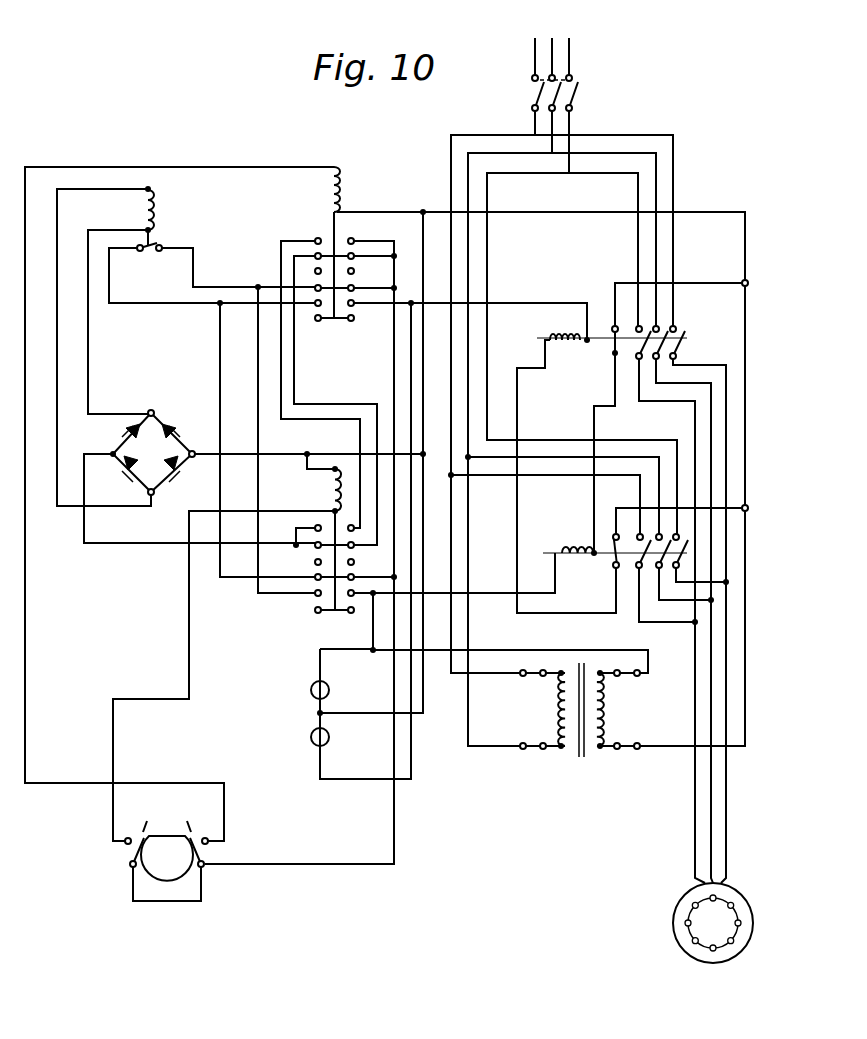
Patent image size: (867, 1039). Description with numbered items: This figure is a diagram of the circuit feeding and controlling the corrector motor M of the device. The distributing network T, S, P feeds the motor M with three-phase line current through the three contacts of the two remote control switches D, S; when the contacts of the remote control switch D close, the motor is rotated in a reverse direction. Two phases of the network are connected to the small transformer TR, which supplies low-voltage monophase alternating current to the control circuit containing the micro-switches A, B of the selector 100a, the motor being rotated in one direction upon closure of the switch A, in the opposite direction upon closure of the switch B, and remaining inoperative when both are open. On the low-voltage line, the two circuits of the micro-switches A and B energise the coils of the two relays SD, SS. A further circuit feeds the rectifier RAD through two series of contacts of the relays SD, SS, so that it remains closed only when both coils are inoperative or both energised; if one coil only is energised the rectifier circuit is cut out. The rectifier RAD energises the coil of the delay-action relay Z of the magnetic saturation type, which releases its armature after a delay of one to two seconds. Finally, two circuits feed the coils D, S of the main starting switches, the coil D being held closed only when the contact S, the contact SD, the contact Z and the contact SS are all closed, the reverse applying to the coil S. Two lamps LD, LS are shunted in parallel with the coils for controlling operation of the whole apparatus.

The delay-action relay Z is at (156, 220).
The relay SD is at (343, 240).
The relay SS is at (317, 541).
The rectifier RAD is at (154, 448).
The lamp LS is at (302, 690).
The lamp LD is at (302, 738).
The selector switch 100a is at (167, 842).
The micro-switch A is at (133, 846).
The micro-switch B is at (203, 862).
The distributing network phase T is at (551, 65).
The remote control switch S is at (615, 293).
The distributing network phase P is at (570, 65).
The remote control switch D is at (612, 352).
The transformer TR is at (580, 724).
The motor M is at (695, 923).